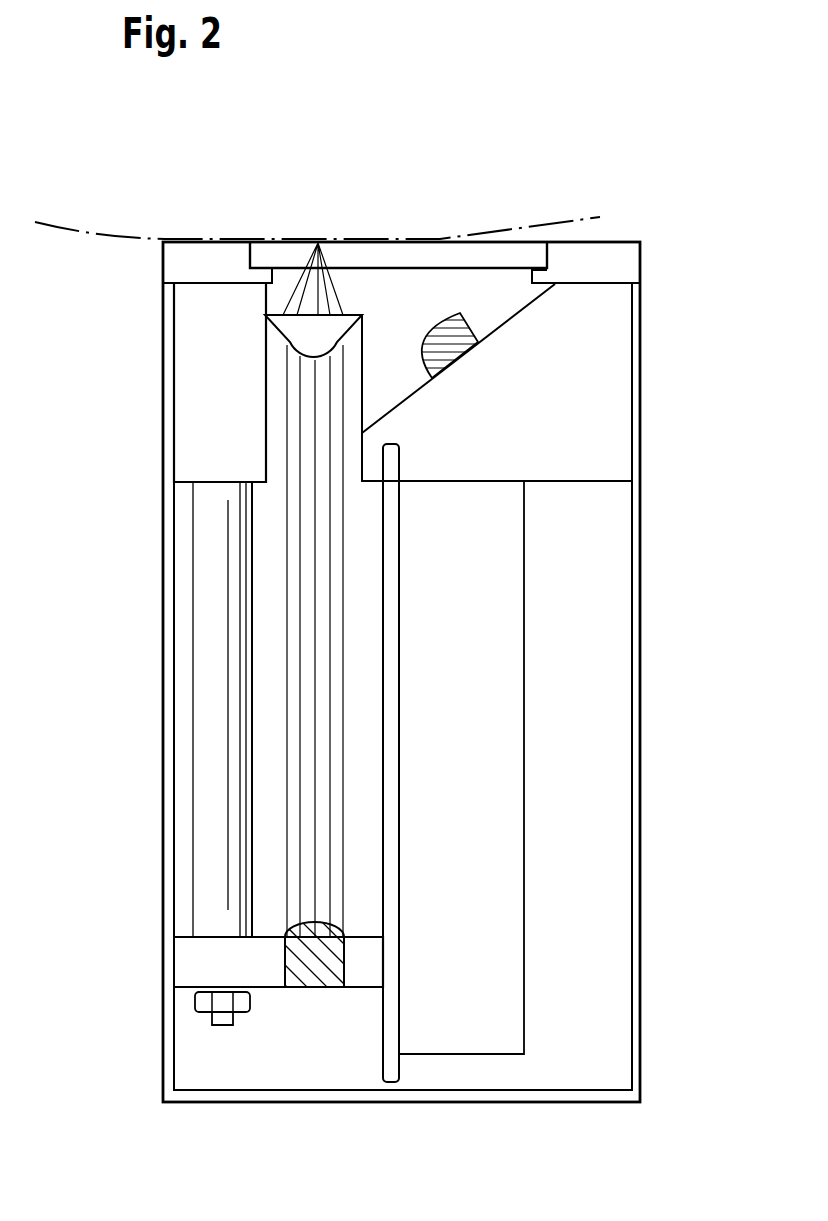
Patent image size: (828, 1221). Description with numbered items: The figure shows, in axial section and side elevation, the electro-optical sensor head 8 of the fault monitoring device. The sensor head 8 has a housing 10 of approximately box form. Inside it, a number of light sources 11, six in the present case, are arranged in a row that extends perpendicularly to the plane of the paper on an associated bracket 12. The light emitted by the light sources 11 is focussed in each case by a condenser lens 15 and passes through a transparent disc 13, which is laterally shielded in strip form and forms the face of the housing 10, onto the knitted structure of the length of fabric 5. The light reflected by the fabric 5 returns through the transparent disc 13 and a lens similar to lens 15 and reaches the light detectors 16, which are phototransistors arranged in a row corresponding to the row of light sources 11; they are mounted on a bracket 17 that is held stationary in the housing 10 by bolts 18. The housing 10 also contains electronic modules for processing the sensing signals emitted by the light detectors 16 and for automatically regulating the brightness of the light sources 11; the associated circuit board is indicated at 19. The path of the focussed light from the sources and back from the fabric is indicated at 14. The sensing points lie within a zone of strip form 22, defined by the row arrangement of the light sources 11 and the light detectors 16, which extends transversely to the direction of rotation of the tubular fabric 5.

The length of fabric 5 is at (70, 222).
The sensor head 8 is at (641, 710).
The housing 10 is at (641, 517).
The light sources 11 is at (305, 978).
The bracket 12 is at (188, 963).
The transparent disc 13 is at (437, 255).
The light beam 14 is at (325, 290).
The condenser lens 15 is at (298, 332).
The light detectors 16 is at (465, 322).
The bracket 17 is at (608, 367).
The bolts 18 is at (225, 1027).
The circuit board 19 is at (507, 792).
The zone of strip form 22 is at (318, 243).